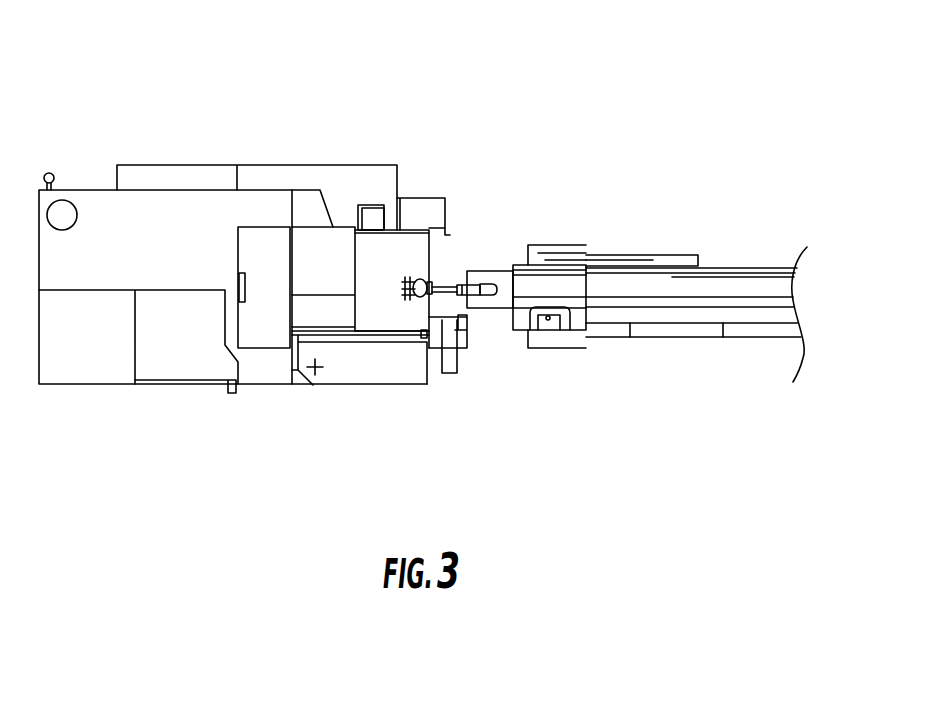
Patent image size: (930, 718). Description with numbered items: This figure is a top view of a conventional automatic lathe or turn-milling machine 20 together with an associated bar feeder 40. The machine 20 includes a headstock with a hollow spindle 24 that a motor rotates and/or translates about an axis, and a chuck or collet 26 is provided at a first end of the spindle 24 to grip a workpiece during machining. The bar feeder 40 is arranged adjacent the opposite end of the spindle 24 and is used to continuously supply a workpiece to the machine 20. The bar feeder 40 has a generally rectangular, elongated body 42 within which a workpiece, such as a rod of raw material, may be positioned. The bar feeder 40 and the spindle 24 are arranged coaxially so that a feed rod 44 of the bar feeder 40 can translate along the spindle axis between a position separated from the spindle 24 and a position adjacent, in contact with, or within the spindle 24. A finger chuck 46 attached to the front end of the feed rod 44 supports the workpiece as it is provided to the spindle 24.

The turn-milling machine 20 is at (155, 98).
The spindle 24 is at (412, 270).
The chuck or collet 26 is at (412, 298).
The bar feeder 40 is at (656, 178).
The elongated body 42 is at (772, 287).
The feed rod 44 is at (502, 290).
The finger chuck 46 is at (482, 290).